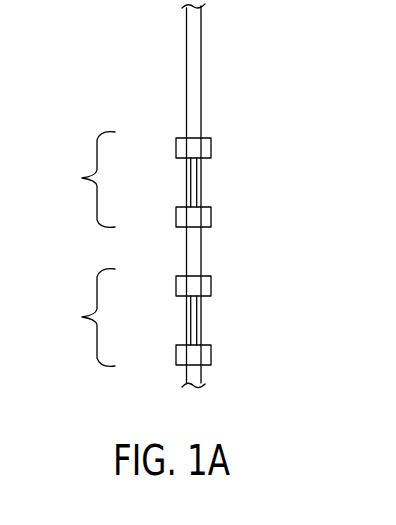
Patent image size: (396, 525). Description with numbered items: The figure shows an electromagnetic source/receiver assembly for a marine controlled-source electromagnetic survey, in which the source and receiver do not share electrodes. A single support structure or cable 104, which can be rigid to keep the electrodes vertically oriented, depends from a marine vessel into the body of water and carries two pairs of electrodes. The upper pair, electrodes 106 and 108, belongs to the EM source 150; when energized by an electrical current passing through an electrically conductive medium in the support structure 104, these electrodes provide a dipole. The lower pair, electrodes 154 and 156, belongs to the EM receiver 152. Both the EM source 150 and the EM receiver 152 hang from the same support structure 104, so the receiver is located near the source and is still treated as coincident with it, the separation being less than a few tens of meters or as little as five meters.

The support structure 104 is at (186, 30).
The electrode 106 is at (176, 147).
The electrode 108 is at (176, 216).
The EM source 150 is at (82, 178).
The EM receiver 152 is at (82, 317).
The electrode 154 is at (176, 285).
The electrode 156 is at (176, 354).